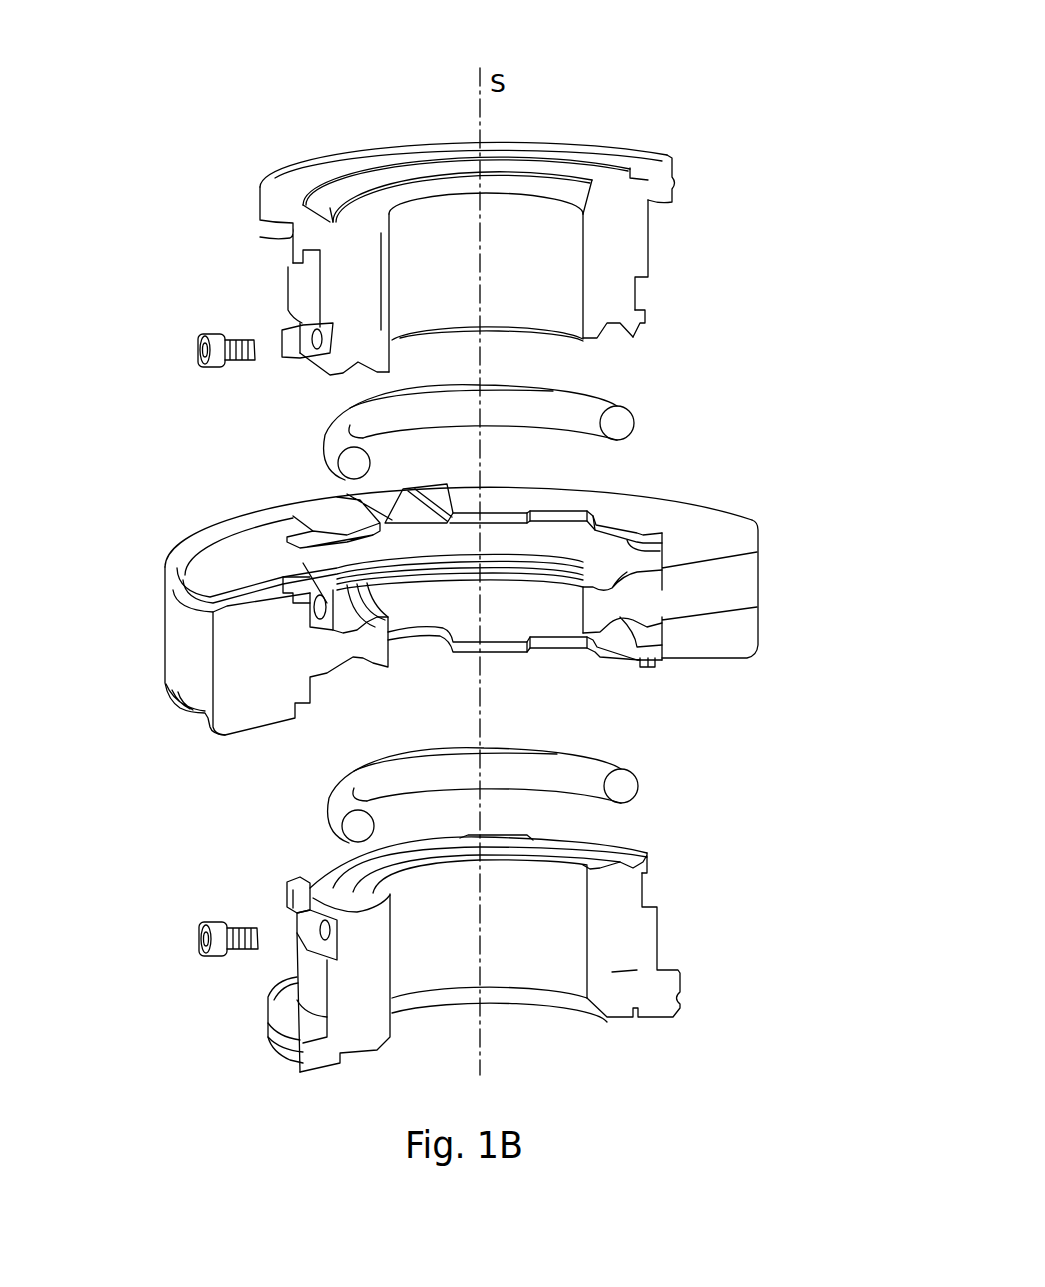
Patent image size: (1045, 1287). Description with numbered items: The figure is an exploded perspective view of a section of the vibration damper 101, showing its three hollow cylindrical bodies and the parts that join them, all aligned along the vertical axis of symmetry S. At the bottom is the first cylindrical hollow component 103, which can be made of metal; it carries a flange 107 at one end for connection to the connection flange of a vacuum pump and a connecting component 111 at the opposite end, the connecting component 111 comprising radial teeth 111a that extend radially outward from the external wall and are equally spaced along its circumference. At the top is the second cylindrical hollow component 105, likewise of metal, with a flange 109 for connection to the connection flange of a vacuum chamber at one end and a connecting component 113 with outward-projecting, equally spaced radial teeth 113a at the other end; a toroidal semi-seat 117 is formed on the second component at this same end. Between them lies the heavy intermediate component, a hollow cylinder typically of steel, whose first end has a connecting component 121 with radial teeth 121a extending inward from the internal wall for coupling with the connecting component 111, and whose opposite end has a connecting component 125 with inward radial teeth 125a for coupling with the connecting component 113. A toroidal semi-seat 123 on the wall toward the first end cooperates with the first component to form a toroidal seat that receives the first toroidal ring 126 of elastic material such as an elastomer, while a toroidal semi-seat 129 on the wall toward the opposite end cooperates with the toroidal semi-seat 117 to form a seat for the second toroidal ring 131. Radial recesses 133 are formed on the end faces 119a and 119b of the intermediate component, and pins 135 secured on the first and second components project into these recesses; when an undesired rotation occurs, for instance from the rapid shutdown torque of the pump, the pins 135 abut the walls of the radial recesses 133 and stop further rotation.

The vibration damper 101 is at (747, 160).
The first cylindrical hollow component 103 is at (657, 937).
The second cylindrical hollow component 105 is at (300, 283).
The flange 107 is at (317, 1073).
The flange 109 is at (322, 160).
The connecting component 111 is at (312, 866).
The radial teeth 111a is at (650, 857).
The connecting component 113 is at (650, 307).
The radial teeth 113a is at (296, 358).
The toroidal semi-seat 117 is at (620, 325).
The face 119a is at (665, 522).
The face 119b is at (247, 738).
The connecting component 121 is at (520, 664).
The radial teeth 121a is at (620, 667).
The toroidal semi-seat 123 is at (663, 635).
The connecting component 125 is at (357, 548).
The radial teeth 125a is at (310, 622).
The first toroidal ring 126 is at (327, 810).
The toroidal semi-seat 129 is at (650, 567).
The second toroidal ring 131 is at (325, 452).
The radial recesses 133 is at (388, 523).
The pins 135 is at (218, 360).